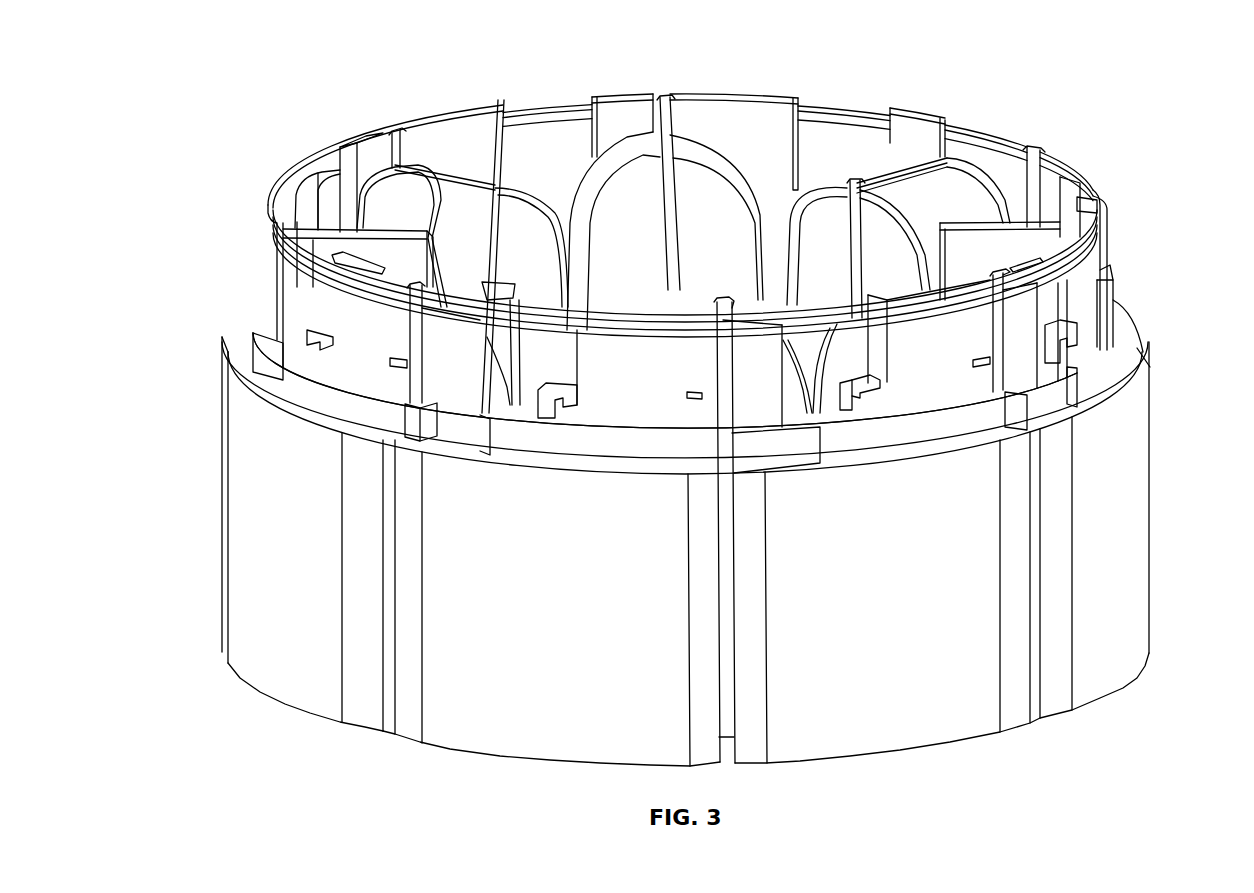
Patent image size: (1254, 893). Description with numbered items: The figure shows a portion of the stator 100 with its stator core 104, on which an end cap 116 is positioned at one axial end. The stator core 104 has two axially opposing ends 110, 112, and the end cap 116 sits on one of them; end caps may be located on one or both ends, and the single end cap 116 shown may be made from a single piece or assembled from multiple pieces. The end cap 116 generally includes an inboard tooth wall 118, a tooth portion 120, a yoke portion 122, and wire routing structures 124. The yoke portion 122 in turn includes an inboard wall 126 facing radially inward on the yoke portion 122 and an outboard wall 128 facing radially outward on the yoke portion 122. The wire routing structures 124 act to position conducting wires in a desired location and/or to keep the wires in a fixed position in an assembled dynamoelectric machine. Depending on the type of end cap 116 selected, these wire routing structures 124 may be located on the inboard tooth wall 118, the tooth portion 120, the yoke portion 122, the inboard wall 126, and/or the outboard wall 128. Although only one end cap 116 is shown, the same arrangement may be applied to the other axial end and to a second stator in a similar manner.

The stator 100 is at (289, 82).
The stator core 104 is at (1152, 578).
The axial end 110 is at (239, 299).
The axial end 112 is at (665, 380).
The end cap 116 is at (721, 81).
The inboard tooth wall 118 is at (838, 269).
The tooth portion 120 is at (947, 177).
The yoke portion 122 is at (1030, 139).
The wire routing structures 124 is at (1066, 268).
The inboard wall 126 is at (1003, 160).
The outboard wall 128 is at (1103, 282).